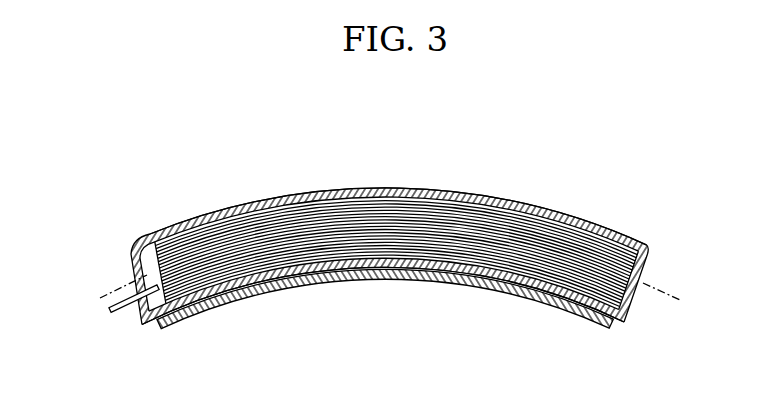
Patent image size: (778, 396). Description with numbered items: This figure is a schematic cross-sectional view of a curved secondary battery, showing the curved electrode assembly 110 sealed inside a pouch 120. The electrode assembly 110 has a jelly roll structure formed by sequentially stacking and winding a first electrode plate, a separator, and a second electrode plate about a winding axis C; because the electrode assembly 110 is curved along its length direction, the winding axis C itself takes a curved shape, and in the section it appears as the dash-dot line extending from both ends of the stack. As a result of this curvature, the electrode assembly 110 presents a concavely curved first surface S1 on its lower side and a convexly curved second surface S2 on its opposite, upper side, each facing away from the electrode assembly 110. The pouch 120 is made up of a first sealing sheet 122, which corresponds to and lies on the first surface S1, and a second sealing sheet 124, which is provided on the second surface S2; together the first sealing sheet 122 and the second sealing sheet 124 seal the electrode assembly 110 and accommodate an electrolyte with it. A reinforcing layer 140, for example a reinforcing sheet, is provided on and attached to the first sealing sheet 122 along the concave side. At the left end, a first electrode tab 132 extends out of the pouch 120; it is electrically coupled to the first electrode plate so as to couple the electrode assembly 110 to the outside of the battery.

The electrode assembly 110 is at (540, 242).
The pouch 120 is at (389, 219).
The first sealing sheet 122 is at (246, 268).
The second sealing sheet 124 is at (188, 222).
The first electrode tab 132 is at (112, 313).
The reinforcing layer 140 is at (521, 288).
The first surface S1 is at (388, 264).
The second surface S2 is at (390, 190).
The winding axis C is at (397, 296).